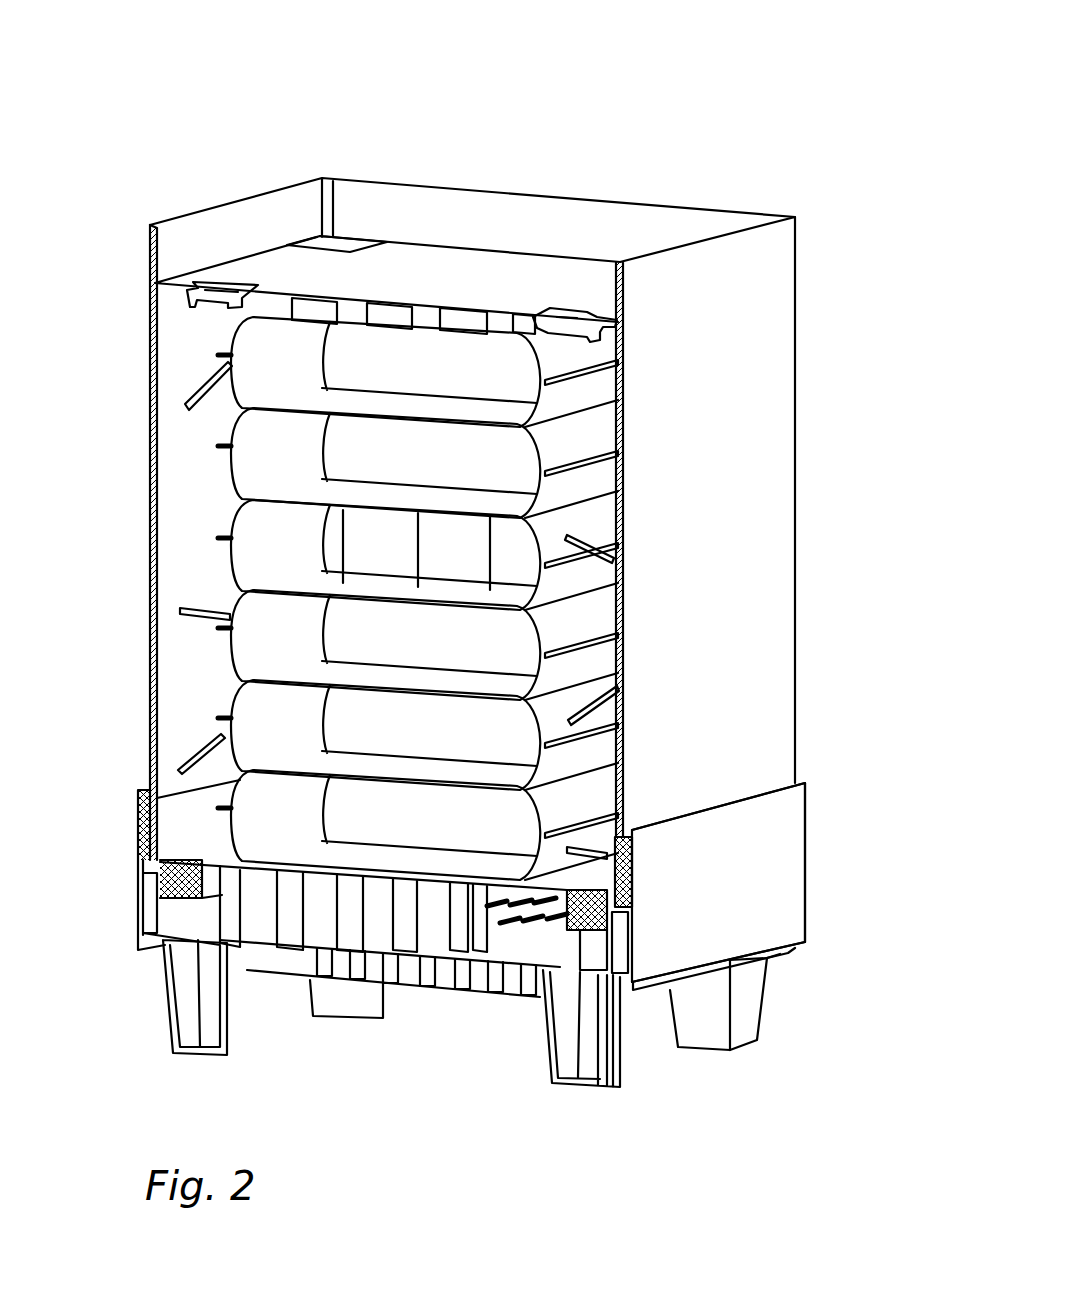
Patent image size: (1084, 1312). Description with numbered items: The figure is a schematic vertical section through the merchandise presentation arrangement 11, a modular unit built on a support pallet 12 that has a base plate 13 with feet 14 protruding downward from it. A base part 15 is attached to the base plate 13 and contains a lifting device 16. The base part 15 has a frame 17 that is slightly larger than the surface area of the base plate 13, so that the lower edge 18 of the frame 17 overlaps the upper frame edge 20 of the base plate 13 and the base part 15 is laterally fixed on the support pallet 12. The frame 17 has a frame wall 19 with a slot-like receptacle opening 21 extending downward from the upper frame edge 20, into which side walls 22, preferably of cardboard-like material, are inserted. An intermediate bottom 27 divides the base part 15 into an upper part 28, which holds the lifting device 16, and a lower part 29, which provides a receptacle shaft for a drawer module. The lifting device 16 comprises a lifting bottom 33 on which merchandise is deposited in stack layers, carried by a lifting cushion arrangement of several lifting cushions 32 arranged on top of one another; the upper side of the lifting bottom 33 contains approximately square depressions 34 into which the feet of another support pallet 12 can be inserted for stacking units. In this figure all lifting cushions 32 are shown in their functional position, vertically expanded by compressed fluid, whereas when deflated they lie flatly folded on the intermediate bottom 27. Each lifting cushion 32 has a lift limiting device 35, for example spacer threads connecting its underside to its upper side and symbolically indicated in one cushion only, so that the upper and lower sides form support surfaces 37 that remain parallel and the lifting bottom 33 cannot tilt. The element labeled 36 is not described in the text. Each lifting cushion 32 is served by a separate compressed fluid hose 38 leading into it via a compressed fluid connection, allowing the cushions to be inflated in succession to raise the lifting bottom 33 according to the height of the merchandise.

The merchandise presentation arrangement 11 is at (513, 162).
The support pallet 12 is at (748, 1012).
The base plate 13 is at (780, 953).
The feet 14 is at (703, 1027).
The base part 15 is at (810, 870).
The lifting device 16 is at (580, 355).
The frame 17 is at (810, 818).
The lower edge 18 is at (653, 990).
The frame wall 19 is at (752, 915).
The upper frame edge 20 is at (733, 800).
The receptacle opening 21 is at (630, 875).
The side walls 22 is at (746, 457).
The intermediate bottom 27 is at (417, 880).
The upper part 28 is at (205, 831).
The lower part 29 is at (523, 938).
The lifting cushions 32 is at (510, 497).
The lifting bottom 33 is at (535, 270).
The depressions 34 is at (343, 245).
The lift limiting device 35 is at (493, 558).
The band 36 is at (420, 548).
The support surfaces 37 is at (327, 400).
The compressed fluid hose 38 is at (193, 613).